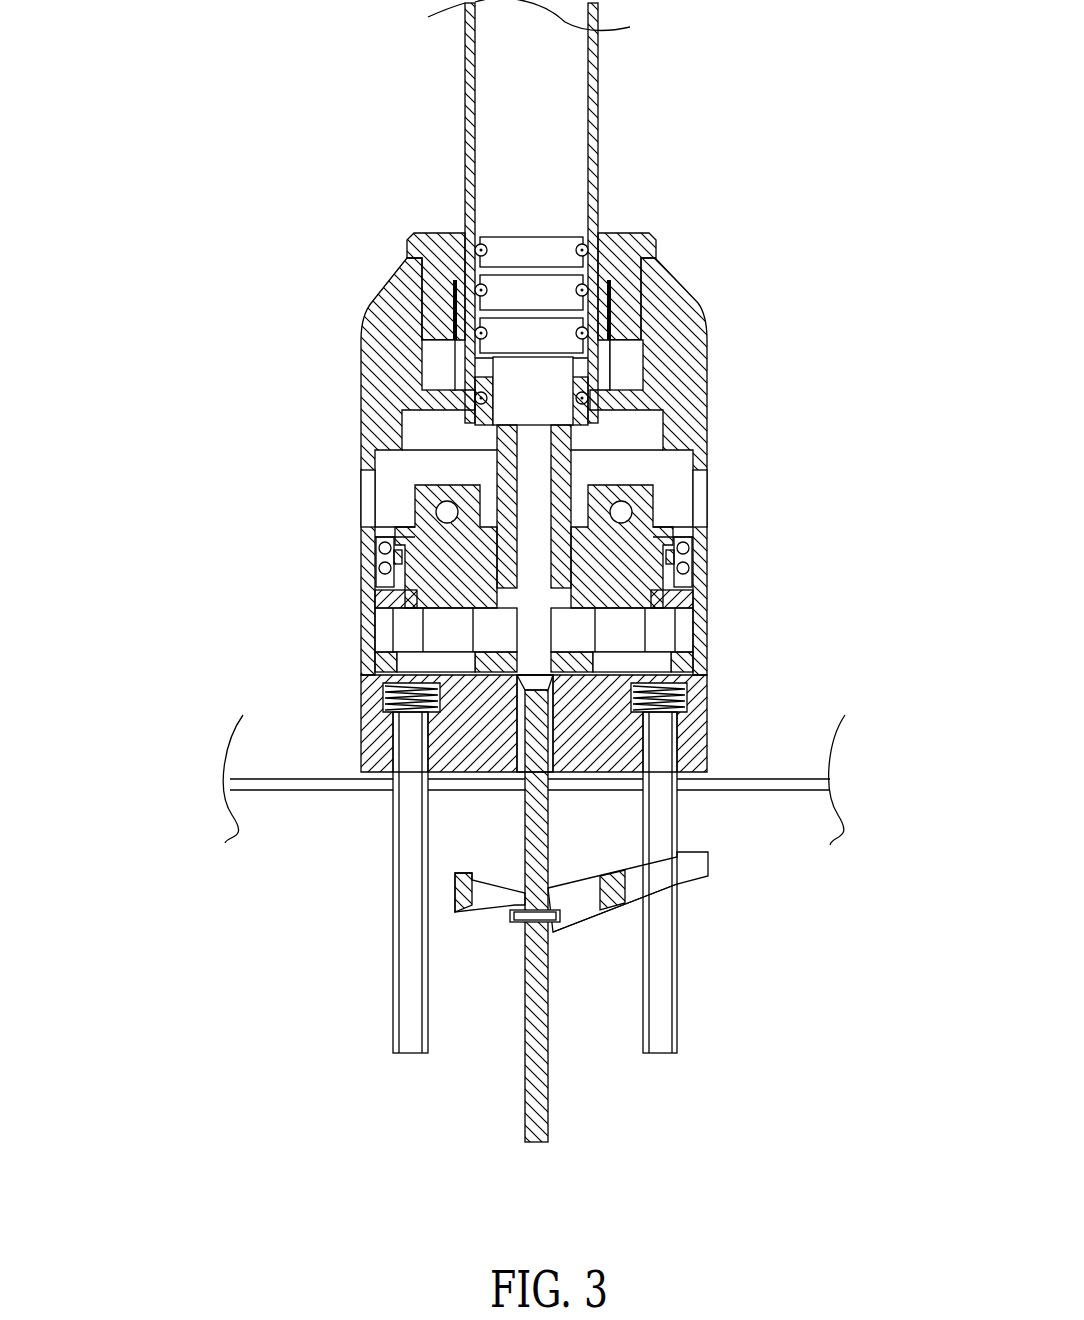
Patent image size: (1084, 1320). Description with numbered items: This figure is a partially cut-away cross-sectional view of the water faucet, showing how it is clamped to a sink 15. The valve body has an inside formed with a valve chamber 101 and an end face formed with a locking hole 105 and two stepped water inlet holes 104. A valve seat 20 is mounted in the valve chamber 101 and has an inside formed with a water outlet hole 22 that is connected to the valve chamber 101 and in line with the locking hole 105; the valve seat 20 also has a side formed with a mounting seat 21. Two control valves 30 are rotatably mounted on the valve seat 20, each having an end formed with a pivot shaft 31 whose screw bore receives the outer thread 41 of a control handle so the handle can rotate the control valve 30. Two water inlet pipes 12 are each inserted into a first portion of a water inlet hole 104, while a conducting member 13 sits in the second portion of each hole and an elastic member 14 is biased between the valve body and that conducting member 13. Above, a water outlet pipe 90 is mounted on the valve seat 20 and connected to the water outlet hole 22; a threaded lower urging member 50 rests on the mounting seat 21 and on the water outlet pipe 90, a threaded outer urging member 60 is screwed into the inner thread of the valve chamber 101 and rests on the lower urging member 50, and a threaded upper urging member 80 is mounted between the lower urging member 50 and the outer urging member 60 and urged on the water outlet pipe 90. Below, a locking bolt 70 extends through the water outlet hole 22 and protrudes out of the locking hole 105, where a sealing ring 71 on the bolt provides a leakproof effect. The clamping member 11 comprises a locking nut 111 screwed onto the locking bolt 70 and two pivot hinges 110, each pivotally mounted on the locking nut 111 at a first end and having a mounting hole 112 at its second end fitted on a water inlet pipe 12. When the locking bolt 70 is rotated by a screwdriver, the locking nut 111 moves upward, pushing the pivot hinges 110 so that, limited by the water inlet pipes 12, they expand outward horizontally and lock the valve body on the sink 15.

The water outlet pipe 90 is at (603, 162).
The upper urging member 80 is at (658, 232).
The outer urging member 60 is at (698, 318).
The lower urging member 50 is at (450, 378).
The water outlet hole 22 is at (510, 404).
The mounting seat 21 is at (497, 463).
The valve seat 20 is at (675, 526).
The pivot shaft 31 is at (400, 527).
The outer thread 41 is at (534, 558).
The control valve 30 is at (383, 598).
The valve chamber 101 is at (525, 625).
The water inlet hole 104 is at (361, 722).
The locking hole 105 is at (520, 745).
The conducting member 13 is at (700, 680).
The elastic member 14 is at (692, 704).
The sink 15 is at (795, 787).
The sealing ring 71 is at (553, 690).
The clamping member 11 is at (713, 877).
The mounting hole 112 is at (635, 885).
The pivot hinge 110 is at (645, 908).
The water inlet pipe 12 is at (390, 1010).
The locking nut 111 is at (560, 930).
The locking bolt 70 is at (558, 1142).